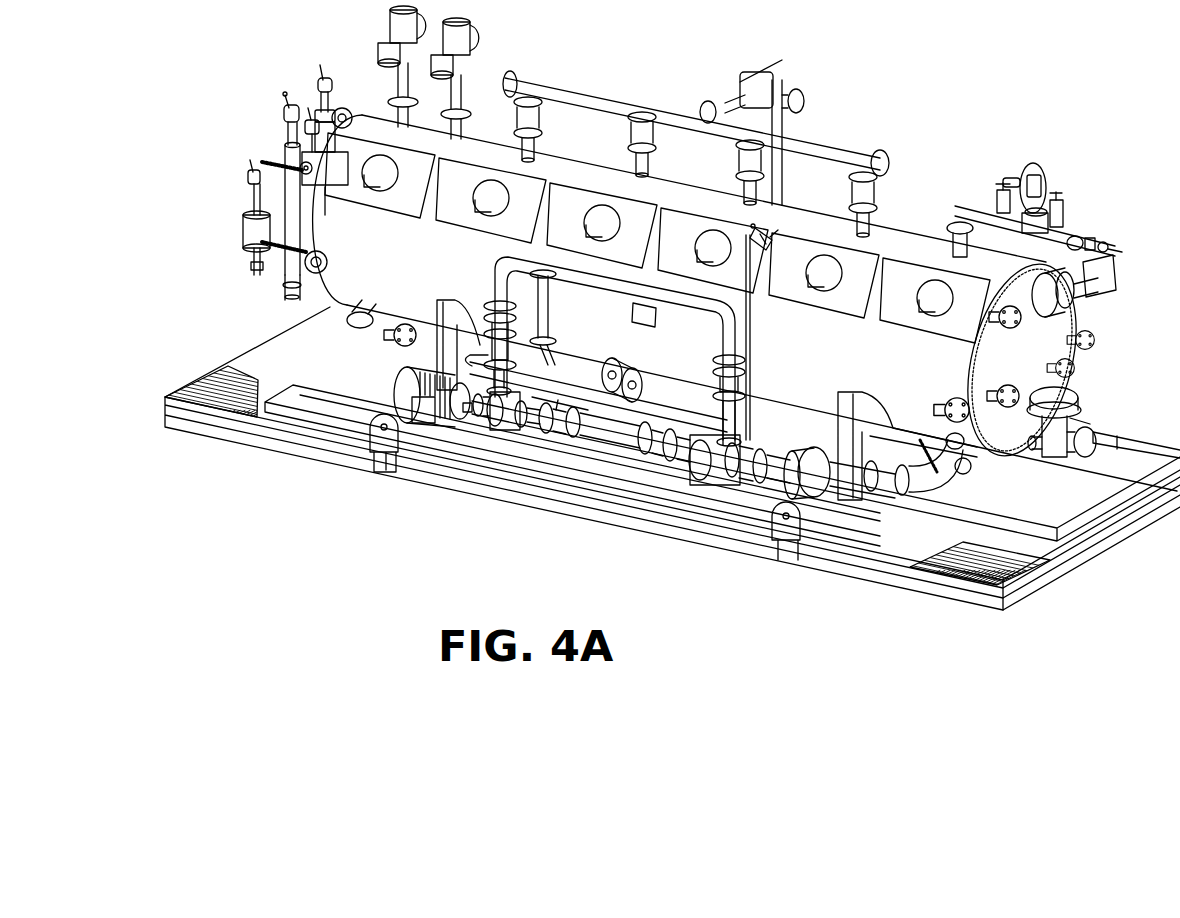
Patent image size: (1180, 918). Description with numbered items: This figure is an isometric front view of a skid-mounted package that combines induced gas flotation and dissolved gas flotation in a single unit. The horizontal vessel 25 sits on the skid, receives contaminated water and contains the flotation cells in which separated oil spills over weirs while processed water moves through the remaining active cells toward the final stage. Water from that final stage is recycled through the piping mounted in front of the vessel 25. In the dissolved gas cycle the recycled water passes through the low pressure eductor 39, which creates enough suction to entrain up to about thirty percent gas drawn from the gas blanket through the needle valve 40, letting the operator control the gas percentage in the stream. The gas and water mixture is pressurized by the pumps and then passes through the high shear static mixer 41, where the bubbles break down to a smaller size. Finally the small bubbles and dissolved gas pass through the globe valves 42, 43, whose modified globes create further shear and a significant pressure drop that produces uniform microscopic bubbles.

The vessel 25 is at (932, 183).
The low pressure eductor 39 is at (688, 426).
The needle valve 40 is at (764, 239).
The high shear static mixer 41 is at (549, 313).
The globe valve 42 is at (620, 368).
The globe valve 43 is at (466, 342).